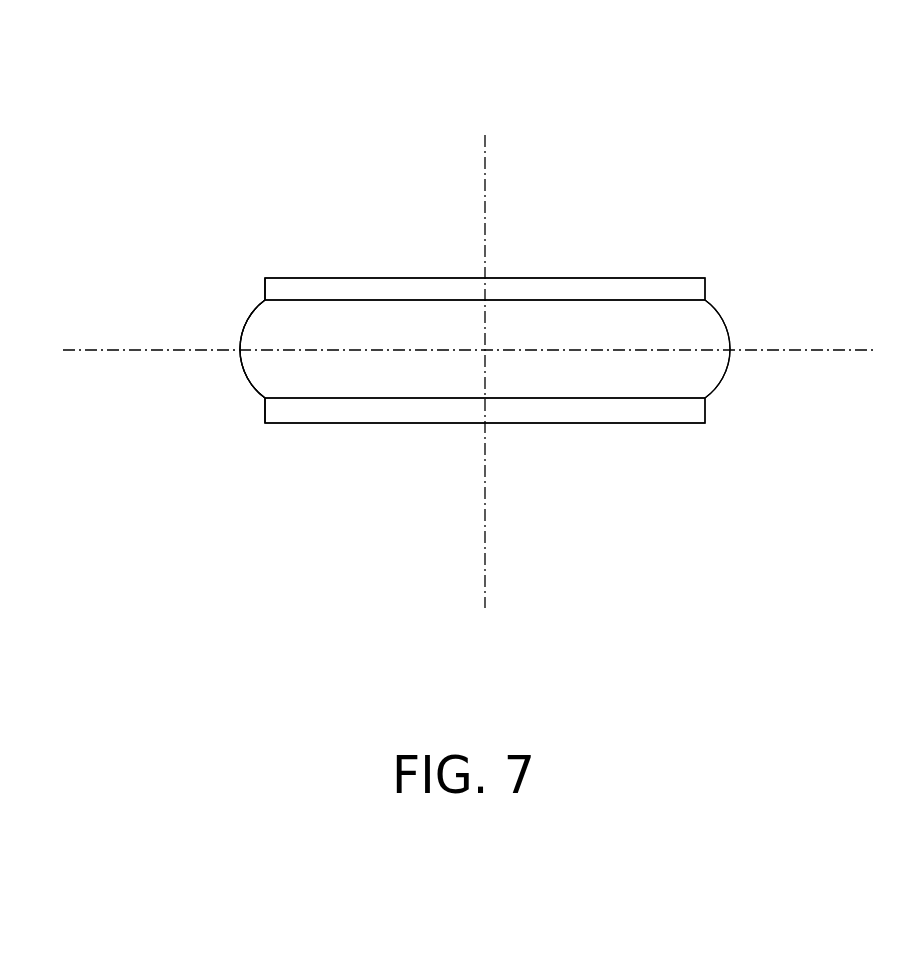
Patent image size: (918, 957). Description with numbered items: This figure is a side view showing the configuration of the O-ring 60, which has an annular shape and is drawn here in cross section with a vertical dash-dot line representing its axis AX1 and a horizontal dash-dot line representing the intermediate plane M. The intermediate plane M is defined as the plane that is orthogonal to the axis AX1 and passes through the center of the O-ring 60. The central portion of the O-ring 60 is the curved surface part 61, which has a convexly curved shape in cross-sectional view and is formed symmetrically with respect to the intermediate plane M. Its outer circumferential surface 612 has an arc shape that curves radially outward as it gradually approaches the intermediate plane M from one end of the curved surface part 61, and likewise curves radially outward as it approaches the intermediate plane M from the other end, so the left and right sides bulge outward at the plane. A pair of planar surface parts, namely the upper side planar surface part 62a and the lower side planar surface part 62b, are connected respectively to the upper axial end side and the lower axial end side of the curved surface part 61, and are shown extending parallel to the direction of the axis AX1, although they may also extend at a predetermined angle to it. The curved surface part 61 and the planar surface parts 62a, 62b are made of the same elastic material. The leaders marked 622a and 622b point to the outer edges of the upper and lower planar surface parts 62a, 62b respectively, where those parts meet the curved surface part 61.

The O-ring 60 is at (500, 45).
The curved surface part 61 is at (341, 327).
The upper side planar surface part 62a is at (402, 283).
The lower side planar surface part 62b is at (355, 424).
The outer circumferential surface 612 is at (242, 362).
The edge of first flange portion 622a is at (267, 283).
The edge of second flange portion 622b is at (265, 412).
The axis AX1 is at (484, 390).
The intermediate plane M is at (108, 348).